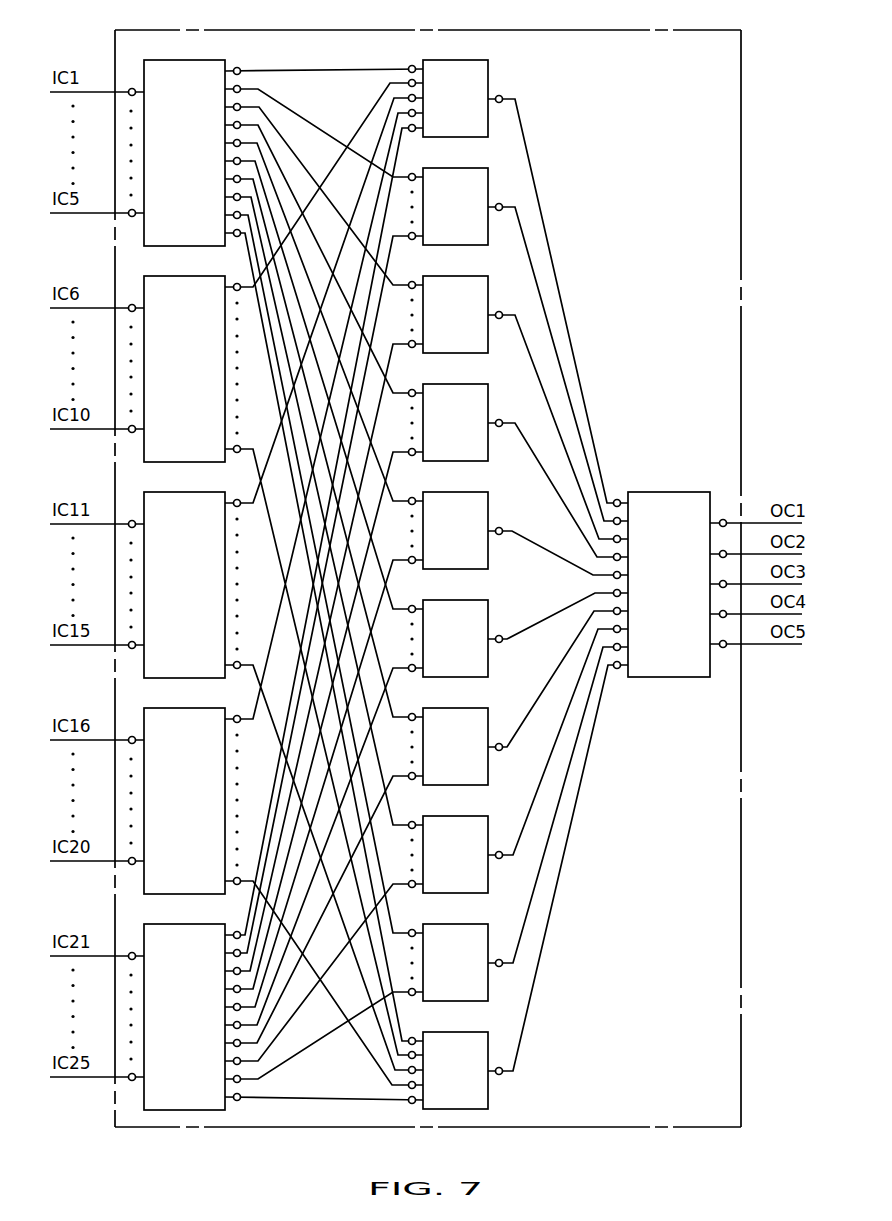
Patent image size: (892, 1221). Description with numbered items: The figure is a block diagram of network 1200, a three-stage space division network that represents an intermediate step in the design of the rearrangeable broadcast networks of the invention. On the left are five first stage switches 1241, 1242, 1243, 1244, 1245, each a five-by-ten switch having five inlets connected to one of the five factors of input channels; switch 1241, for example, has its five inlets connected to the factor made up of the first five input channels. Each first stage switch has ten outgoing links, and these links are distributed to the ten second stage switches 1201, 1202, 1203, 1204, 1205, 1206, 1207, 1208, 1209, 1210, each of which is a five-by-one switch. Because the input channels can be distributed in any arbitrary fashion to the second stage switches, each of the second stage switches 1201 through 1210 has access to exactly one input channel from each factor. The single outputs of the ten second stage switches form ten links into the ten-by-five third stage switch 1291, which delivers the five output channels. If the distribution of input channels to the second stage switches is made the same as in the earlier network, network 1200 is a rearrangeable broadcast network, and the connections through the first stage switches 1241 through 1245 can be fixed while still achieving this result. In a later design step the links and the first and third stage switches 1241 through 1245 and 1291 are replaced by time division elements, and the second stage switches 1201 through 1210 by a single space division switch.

The network 1200 is at (742, 20).
The first stage switch 1241 is at (180, 60).
The first stage switch 1242 is at (180, 276).
The first stage switch 1243 is at (180, 492).
The first stage switch 1244 is at (180, 708).
The first stage switch 1245 is at (180, 924).
The second stage switch 1201 is at (443, 60).
The second stage switch 1202 is at (443, 168).
The second stage switch 1203 is at (443, 276).
The second stage switch 1204 is at (443, 384).
The second stage switch 1205 is at (443, 492).
The second stage switch 1206 is at (443, 600).
The second stage switch 1207 is at (443, 708).
The second stage switch 1208 is at (443, 816).
The second stage switch 1209 is at (443, 924).
The second stage switch 1210 is at (443, 1032).
The third stage switch 1291 is at (665, 492).